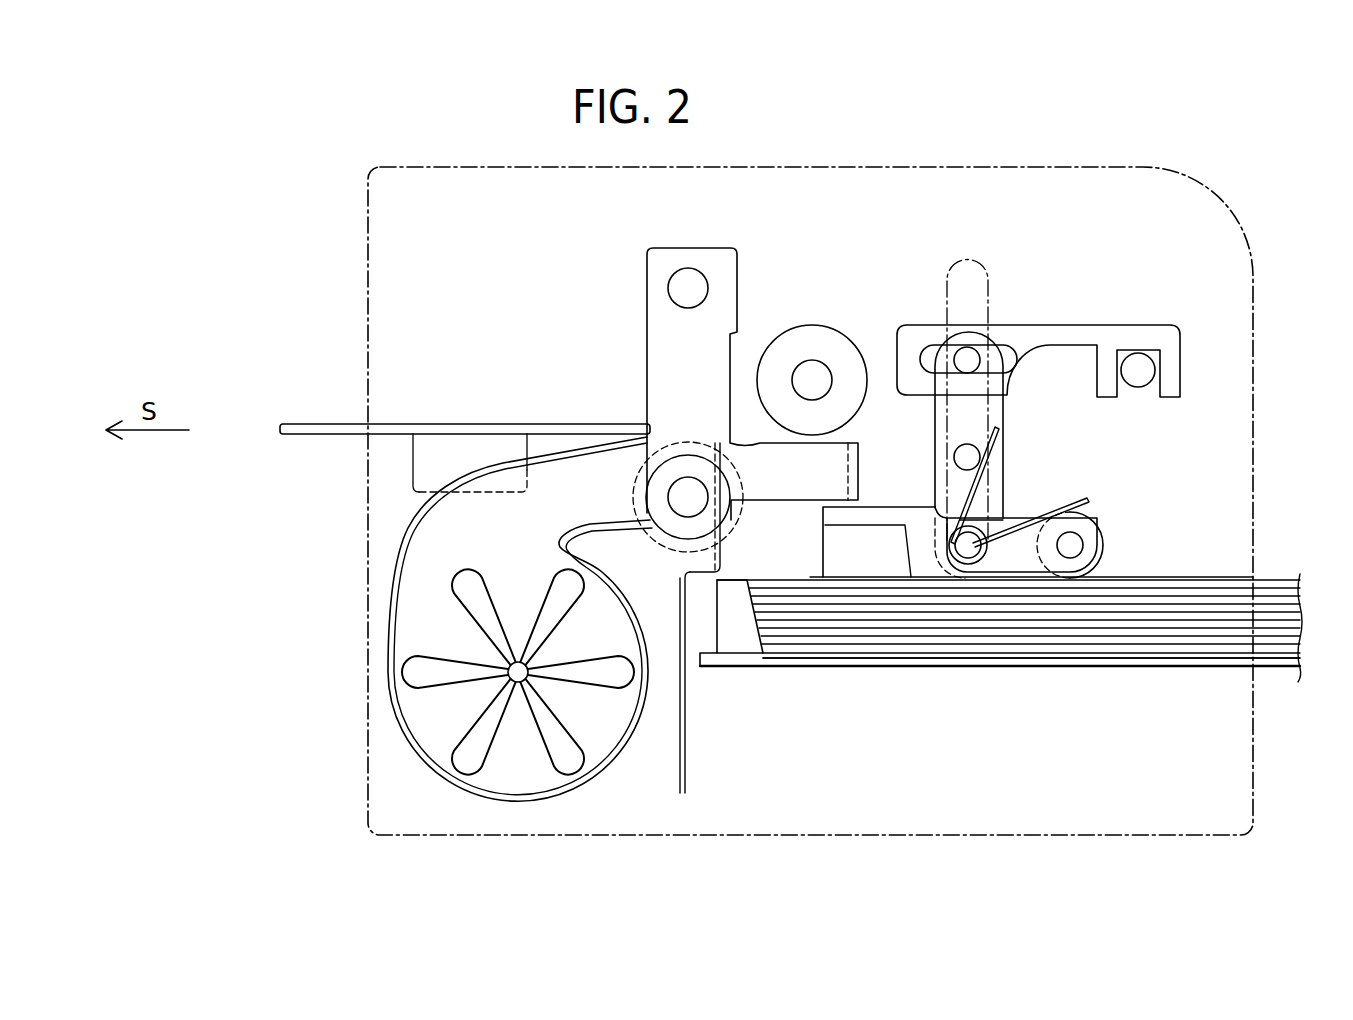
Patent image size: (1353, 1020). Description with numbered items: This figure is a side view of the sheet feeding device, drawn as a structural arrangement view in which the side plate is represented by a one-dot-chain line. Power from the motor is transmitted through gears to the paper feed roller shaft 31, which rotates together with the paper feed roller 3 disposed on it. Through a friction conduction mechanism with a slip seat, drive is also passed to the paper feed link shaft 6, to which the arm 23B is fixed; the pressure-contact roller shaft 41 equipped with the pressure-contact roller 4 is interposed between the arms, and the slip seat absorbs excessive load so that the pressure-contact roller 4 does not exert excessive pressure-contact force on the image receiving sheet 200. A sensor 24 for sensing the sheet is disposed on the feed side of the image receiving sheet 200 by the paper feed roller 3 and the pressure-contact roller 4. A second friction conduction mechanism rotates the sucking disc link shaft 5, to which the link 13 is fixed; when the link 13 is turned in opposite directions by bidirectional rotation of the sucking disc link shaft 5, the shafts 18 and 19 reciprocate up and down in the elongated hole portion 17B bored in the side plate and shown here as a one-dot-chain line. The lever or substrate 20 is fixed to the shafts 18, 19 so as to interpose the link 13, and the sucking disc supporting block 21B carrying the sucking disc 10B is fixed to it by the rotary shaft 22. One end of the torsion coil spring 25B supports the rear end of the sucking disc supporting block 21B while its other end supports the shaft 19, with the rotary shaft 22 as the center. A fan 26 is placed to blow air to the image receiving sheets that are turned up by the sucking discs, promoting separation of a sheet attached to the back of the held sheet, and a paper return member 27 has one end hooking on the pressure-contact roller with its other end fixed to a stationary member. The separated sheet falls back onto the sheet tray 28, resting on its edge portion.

The paper feed roller 3 is at (812, 325).
The paper feed roller shaft 31 is at (824, 370).
The pressure-contact roller 4 is at (670, 538).
The pressure-contact roller shaft 41 is at (672, 508).
The sucking disc link shaft 5 is at (1138, 353).
The paper feed link shaft 6 is at (686, 268).
The link 13 is at (1087, 325).
The elongated hole portion 17B is at (968, 258).
The shaft 18 is at (972, 358).
The shaft 19 is at (976, 446).
The lever or substrate 20 is at (1000, 465).
The sucking disc supporting block 21B is at (917, 518).
The rotary shaft 22 is at (1008, 517).
The arm 23B is at (714, 250).
The sensor 24 is at (413, 475).
The torsion coil spring 25B is at (1083, 502).
The fan 26 is at (397, 718).
The paper return member 27 is at (687, 748).
The sheet tray 28 is at (1278, 657).
The image receiving sheet 200 is at (1180, 578).
The sucking disc 10B is at (835, 553).